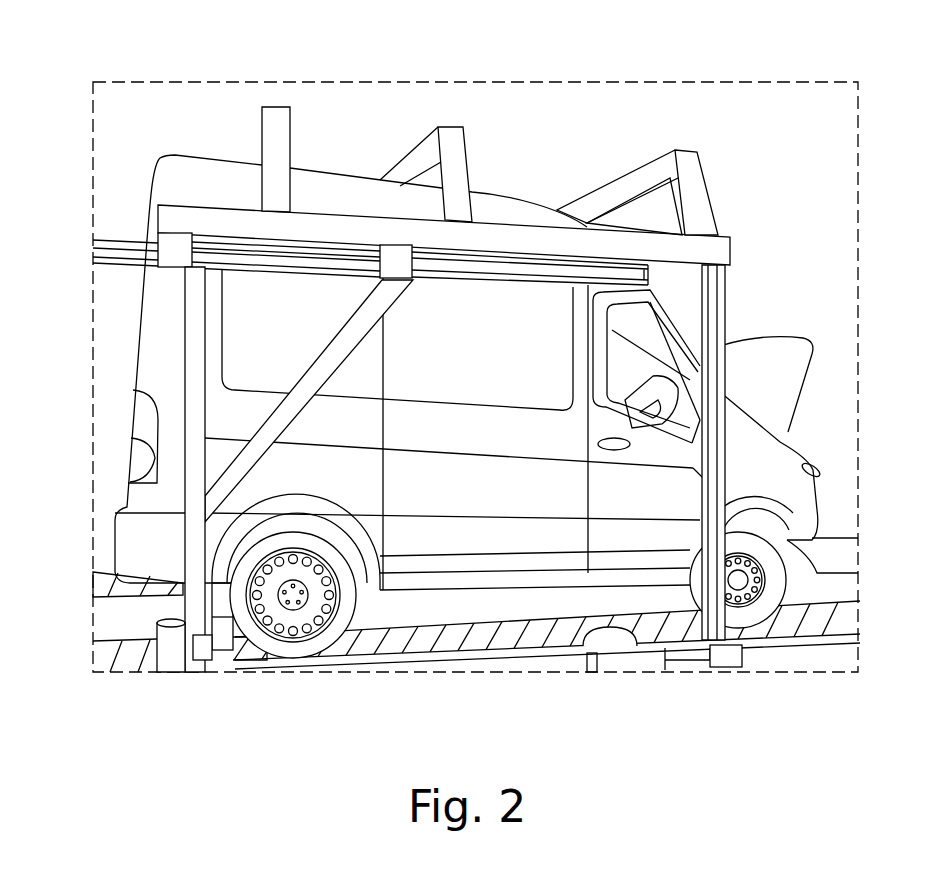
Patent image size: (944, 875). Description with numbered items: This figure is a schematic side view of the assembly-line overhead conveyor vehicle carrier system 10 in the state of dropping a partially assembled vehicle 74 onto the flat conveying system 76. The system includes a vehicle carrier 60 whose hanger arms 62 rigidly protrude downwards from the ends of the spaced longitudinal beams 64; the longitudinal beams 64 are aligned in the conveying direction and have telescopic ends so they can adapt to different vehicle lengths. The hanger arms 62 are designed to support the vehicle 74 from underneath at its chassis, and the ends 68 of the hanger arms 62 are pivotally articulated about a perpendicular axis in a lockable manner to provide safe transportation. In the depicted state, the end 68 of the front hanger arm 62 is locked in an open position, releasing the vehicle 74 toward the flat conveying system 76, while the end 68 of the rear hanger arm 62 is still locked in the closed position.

The assembly-line overhead conveyor vehicle carrier system 10 is at (722, 120).
The vehicle carrier 60 is at (449, 158).
The hanger arm 62 is at (195, 322).
The longitudinal beam 64 is at (513, 245).
The end 68 is at (160, 622).
The vehicle 74 is at (427, 468).
The flat conveying system 76 is at (506, 628).